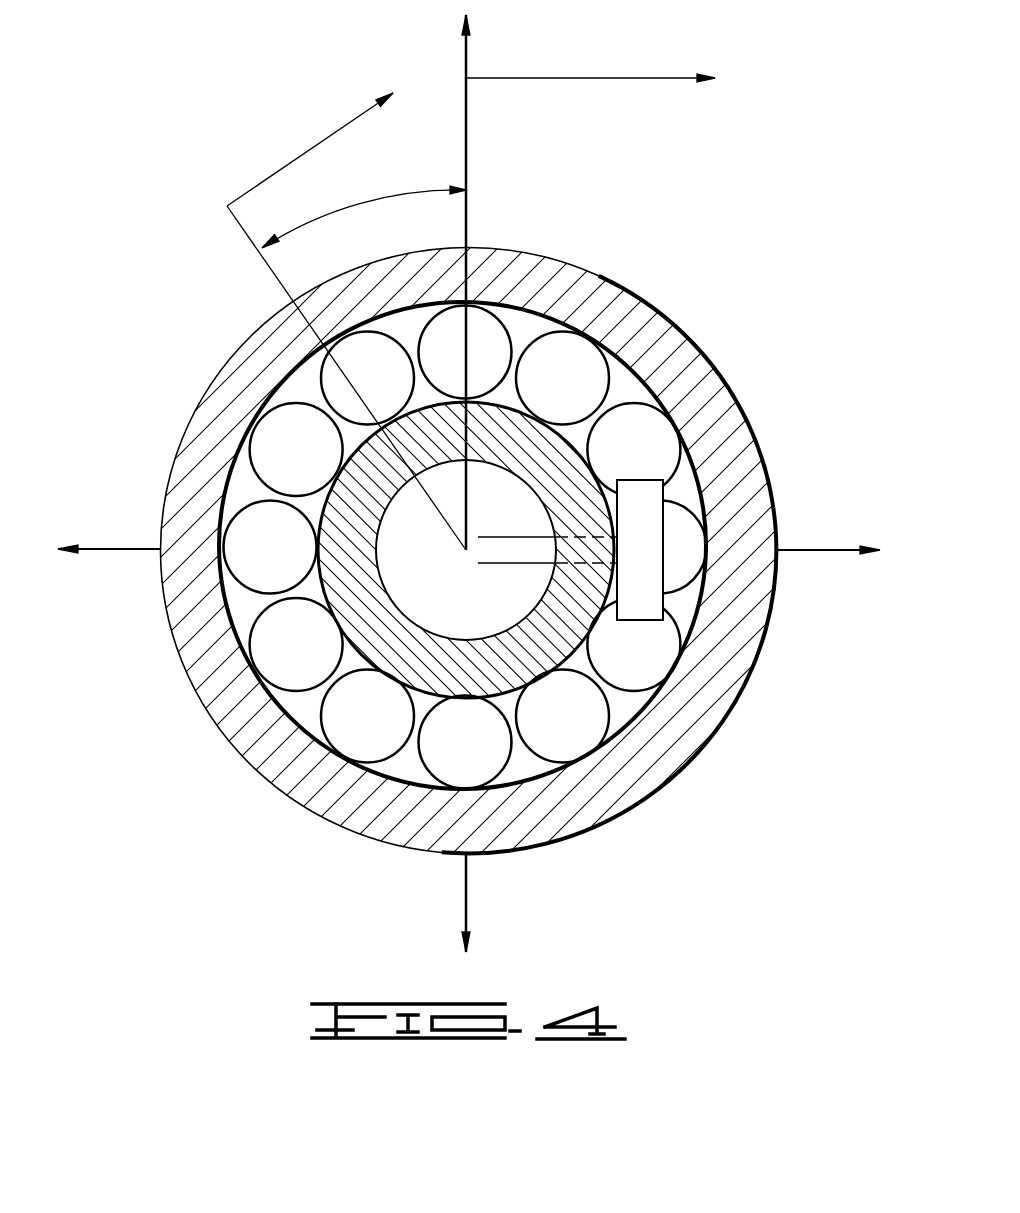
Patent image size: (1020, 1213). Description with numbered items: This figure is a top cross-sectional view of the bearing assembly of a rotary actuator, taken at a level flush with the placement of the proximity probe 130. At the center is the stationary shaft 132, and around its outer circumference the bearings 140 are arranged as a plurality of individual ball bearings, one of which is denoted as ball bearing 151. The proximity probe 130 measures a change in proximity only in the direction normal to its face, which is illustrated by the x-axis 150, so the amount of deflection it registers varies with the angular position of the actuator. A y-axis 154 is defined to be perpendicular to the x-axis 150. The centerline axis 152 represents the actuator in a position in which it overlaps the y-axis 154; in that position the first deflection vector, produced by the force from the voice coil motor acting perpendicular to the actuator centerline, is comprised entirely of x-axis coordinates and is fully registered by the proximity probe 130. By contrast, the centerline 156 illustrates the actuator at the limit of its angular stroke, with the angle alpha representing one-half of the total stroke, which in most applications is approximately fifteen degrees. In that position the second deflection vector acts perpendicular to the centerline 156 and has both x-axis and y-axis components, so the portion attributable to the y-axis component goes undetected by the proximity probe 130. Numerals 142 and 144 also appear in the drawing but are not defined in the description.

The proximity probe 130 is at (712, 487).
The stationary shaft 132 is at (378, 650).
The bearings 140 is at (650, 235).
The inner race 142 is at (510, 677).
The bore 144 is at (523, 567).
The x-axis 150 is at (810, 552).
The ball bearing 151 is at (260, 563).
The centerline axis 152 is at (480, 300).
The y-axis 154 is at (466, 57).
The centerline 156 is at (245, 233).